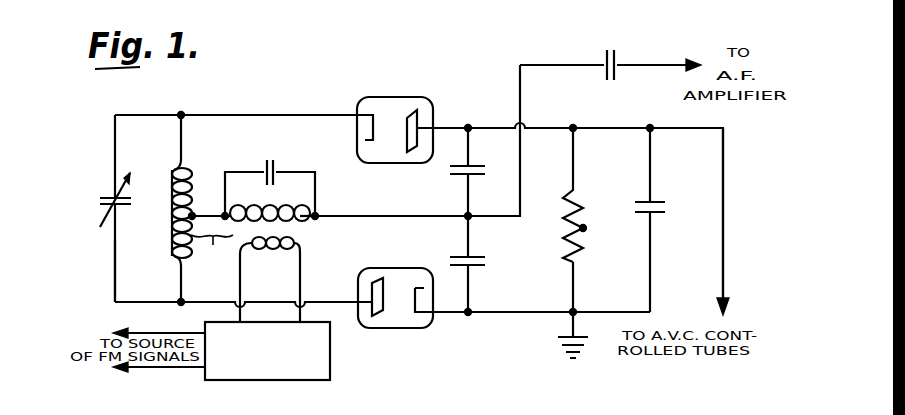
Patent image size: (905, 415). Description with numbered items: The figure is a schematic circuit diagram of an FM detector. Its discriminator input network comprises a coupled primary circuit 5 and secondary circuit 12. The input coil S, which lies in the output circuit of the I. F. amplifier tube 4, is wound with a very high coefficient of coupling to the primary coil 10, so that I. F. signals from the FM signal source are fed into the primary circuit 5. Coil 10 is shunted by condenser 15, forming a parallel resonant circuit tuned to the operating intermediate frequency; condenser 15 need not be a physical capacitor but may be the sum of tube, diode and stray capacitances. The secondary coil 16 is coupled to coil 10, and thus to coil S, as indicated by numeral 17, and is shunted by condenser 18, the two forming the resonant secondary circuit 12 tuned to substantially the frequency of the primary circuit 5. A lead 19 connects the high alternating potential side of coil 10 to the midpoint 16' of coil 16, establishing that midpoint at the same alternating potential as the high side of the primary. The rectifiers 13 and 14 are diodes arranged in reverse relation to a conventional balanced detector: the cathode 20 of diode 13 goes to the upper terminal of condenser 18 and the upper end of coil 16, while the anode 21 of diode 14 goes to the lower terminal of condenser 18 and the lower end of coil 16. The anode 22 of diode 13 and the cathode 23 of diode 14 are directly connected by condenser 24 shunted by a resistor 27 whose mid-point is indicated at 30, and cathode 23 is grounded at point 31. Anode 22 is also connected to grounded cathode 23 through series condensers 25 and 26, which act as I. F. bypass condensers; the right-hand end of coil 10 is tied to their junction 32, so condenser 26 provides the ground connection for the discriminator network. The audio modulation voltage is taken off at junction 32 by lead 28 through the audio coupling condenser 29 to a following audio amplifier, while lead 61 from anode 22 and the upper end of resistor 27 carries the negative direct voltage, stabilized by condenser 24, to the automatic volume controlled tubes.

The I. F. amplifier tube 4 is at (205, 326).
The primary circuit 5 is at (312, 224).
The input coil S is at (271, 250).
The primary coil 10 is at (283, 207).
The secondary circuit 12 is at (135, 255).
The rectifier (diode) 13 is at (383, 96).
The rectifier (diode) 14 is at (430, 322).
The condenser 15 is at (273, 158).
The secondary coil 16 is at (180, 208).
The midpoint of coil 16 16' is at (210, 183).
The coupling indication 17 is at (212, 254).
The condenser 18 is at (105, 197).
The lead 19 is at (208, 211).
The cathode 20 is at (378, 127).
The anode 21 is at (378, 318).
The anode 22 is at (412, 115).
The cathode 23 is at (413, 315).
The condenser 24 is at (668, 201).
The condenser 25 is at (486, 169).
The condenser 26 is at (486, 262).
The resistor 27 is at (565, 246).
The lead 28 is at (550, 65).
The condenser 29 is at (615, 50).
The mid-point 30 is at (583, 228).
The grounding point 31 is at (573, 312).
The junction 32 is at (466, 214).
The lead 61 is at (727, 176).